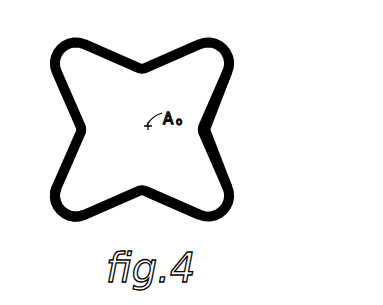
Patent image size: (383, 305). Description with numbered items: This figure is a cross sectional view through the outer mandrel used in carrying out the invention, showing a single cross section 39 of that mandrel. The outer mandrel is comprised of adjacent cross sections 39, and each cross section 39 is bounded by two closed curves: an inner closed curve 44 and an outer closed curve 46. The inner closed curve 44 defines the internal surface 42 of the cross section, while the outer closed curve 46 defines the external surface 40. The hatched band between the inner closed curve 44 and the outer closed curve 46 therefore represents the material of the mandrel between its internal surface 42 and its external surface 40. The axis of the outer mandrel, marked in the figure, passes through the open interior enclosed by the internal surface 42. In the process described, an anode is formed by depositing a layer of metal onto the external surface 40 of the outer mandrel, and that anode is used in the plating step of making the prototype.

The cross section 39 is at (222, 40).
The external surface 40 is at (226, 92).
The internal surface 42 is at (70, 206).
The inner closed curve 44 is at (175, 196).
The outer closed curve 46 is at (226, 152).